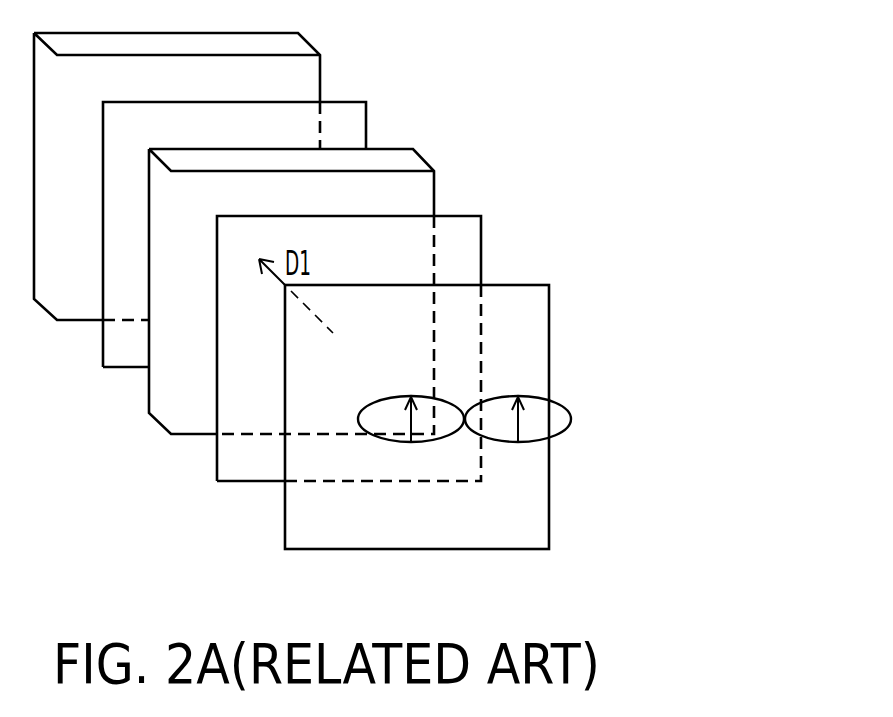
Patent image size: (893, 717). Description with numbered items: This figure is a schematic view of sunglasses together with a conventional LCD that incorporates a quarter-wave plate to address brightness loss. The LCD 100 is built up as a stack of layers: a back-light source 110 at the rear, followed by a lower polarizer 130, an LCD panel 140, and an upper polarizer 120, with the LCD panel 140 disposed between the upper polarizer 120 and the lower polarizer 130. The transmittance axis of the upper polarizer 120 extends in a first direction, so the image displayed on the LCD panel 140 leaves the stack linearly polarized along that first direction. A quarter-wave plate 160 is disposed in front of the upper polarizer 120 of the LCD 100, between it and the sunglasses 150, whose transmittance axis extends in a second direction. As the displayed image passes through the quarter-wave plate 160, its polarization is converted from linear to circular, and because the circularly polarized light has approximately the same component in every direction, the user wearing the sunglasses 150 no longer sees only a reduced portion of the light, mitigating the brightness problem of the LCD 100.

The LCD 100 is at (322, 246).
The back-light source 110 is at (295, 43).
The lower polarizer 130 is at (354, 123).
The LCD panel 140 is at (413, 160).
The upper polarizer 120 is at (382, 324).
The quarter-wave plate 160 is at (527, 293).
The sunglasses 150 is at (557, 400).